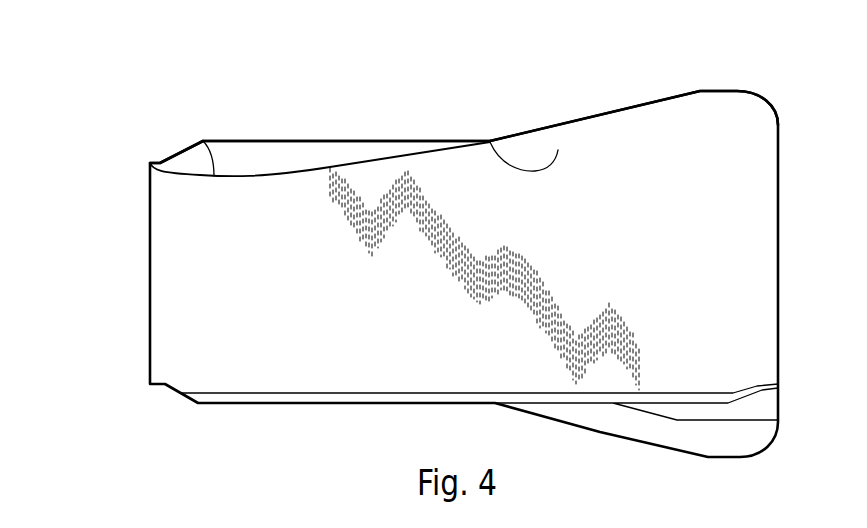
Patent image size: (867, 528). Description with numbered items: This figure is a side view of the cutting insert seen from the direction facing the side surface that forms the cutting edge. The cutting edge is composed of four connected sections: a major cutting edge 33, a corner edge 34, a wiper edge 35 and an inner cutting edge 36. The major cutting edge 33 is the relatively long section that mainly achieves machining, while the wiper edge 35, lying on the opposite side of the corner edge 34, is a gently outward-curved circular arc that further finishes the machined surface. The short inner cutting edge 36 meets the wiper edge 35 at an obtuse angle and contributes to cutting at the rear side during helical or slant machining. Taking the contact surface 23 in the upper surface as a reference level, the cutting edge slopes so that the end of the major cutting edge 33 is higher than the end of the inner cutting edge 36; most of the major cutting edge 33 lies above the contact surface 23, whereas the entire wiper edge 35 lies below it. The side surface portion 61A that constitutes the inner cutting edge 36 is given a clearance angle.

The side surface portion 61A is at (190, 320).
The wiper edge 35 is at (388, 157).
The inner cutting edge 36 is at (200, 142).
The contact surface 23 is at (433, 143).
The corner edge 34 is at (558, 150).
The major cutting edge 33 is at (678, 96).